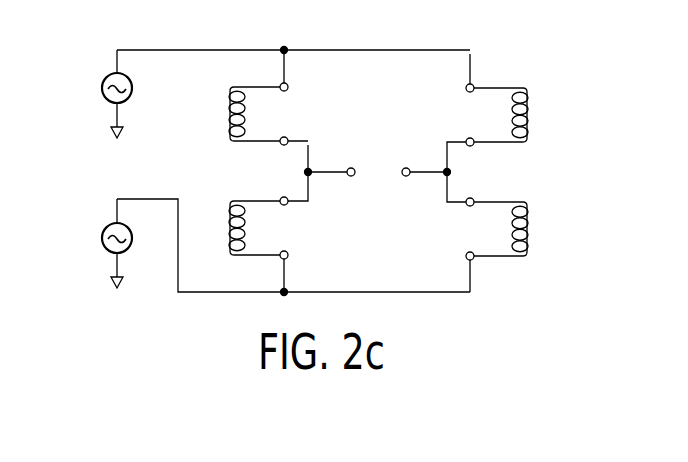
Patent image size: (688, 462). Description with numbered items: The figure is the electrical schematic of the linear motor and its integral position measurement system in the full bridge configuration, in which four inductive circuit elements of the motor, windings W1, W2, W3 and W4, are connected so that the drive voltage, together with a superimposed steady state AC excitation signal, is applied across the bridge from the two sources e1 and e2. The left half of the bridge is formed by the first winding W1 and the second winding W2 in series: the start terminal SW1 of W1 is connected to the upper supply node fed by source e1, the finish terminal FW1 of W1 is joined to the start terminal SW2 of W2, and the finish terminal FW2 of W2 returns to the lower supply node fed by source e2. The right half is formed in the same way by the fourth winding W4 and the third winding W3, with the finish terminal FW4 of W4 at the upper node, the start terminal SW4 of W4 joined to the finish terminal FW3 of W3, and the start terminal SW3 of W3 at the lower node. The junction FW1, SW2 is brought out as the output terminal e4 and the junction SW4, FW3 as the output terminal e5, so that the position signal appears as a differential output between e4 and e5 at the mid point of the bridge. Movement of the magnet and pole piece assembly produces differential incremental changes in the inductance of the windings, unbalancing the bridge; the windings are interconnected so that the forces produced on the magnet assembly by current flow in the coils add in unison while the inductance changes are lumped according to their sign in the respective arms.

The AC excitation voltage source e1 is at (103, 104).
The AC excitation voltage source e2 is at (103, 254).
The bridge mid-point output terminal e4 is at (351, 187).
The bridge mid-point output terminal e5 is at (405, 187).
The first winding W1 is at (237, 114).
The second winding W2 is at (236, 228).
The third winding W3 is at (520, 229).
The fourth winding W4 is at (520, 115).
The start terminal of first winding SW1 is at (261, 75).
The finish terminal of first winding FW1 is at (270, 129).
The start terminal of second winding SW2 is at (261, 188).
The finish terminal of second winding FW2 is at (270, 242).
The start terminal of third winding SW3 is at (486, 242).
The finish terminal of third winding FW3 is at (494, 188).
The start terminal of fourth winding SW4 is at (486, 128).
The finish terminal of fourth winding FW4 is at (494, 74).